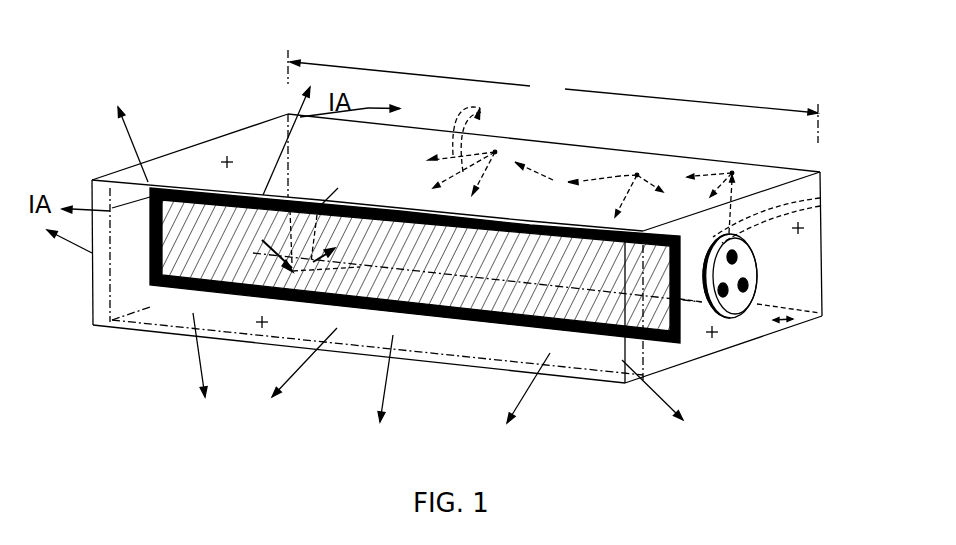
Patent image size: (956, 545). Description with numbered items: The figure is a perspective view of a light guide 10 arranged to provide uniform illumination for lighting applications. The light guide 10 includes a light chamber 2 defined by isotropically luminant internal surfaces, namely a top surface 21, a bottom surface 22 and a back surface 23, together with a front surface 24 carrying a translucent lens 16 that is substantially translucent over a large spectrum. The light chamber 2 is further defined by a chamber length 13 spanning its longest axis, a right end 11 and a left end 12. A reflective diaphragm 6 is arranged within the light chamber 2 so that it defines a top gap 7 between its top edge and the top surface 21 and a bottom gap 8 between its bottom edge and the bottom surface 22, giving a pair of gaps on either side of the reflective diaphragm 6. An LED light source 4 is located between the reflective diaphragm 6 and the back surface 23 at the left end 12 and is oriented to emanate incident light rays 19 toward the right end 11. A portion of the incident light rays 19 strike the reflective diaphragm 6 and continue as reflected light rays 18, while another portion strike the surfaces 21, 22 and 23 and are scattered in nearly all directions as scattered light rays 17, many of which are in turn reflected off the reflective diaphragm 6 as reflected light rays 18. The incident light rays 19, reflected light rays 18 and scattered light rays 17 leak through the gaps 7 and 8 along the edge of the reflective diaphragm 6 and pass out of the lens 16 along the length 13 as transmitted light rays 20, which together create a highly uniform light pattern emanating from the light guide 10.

The light chamber 2 is at (790, 172).
The LED light source 4 is at (735, 306).
The reflective diaphragm 6 is at (590, 338).
The top gap 7 is at (712, 236).
The bottom gap 8 is at (684, 357).
The light guide 10 is at (150, 63).
The right end 11 is at (716, 334).
The left end 12 is at (223, 161).
The chamber length 13 is at (553, 96).
The translucent lens 16 is at (100, 306).
The scattered light rays 17 is at (477, 131).
The reflected light rays 18 is at (415, 254).
The incident light rays 19 is at (508, 158).
The transmitted light rays 20 is at (280, 155).
The top surface 21 is at (668, 171).
The bottom surface 22 is at (771, 321).
The back surface 23 is at (804, 228).
The front surface 24 is at (262, 323).